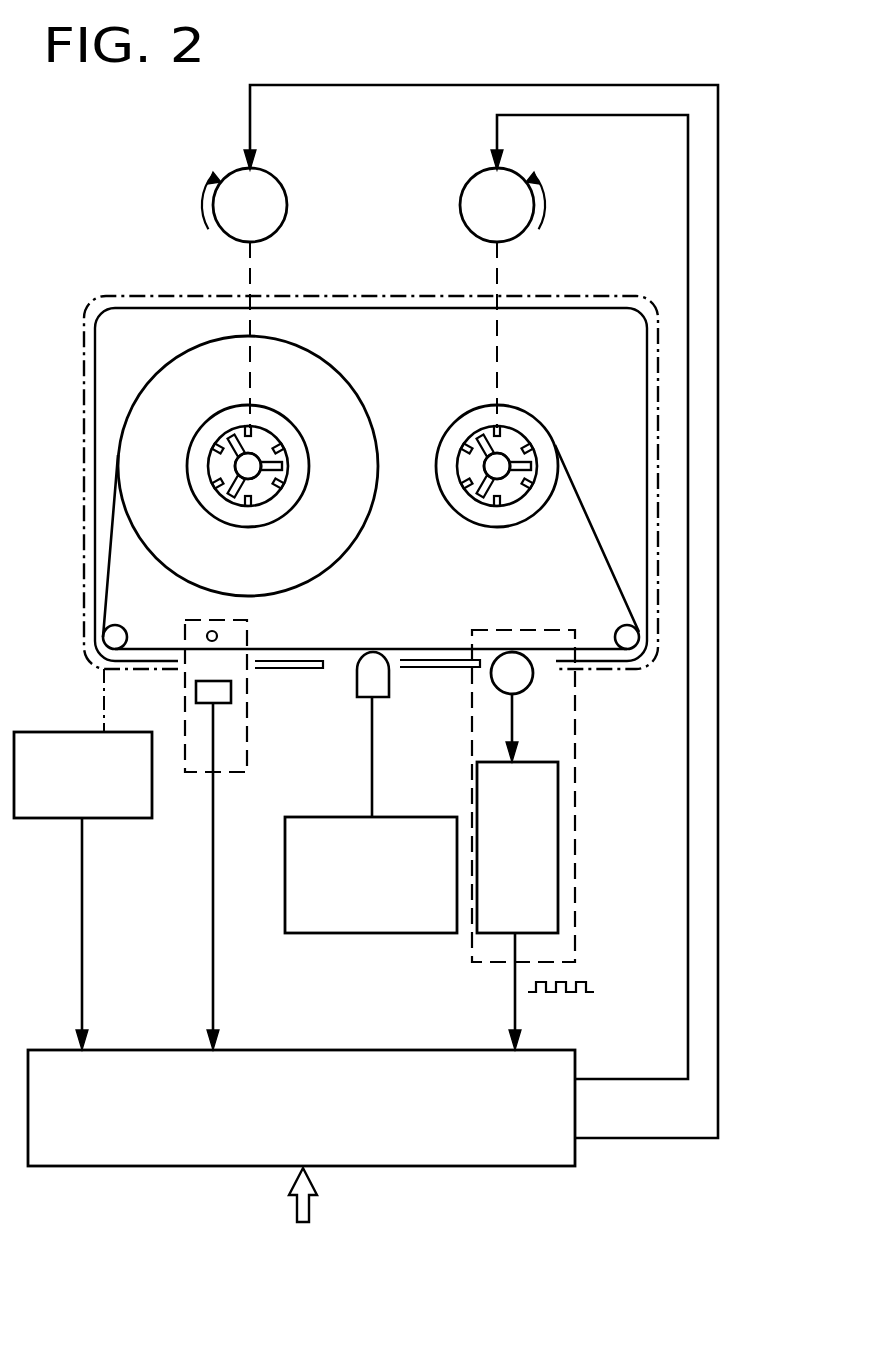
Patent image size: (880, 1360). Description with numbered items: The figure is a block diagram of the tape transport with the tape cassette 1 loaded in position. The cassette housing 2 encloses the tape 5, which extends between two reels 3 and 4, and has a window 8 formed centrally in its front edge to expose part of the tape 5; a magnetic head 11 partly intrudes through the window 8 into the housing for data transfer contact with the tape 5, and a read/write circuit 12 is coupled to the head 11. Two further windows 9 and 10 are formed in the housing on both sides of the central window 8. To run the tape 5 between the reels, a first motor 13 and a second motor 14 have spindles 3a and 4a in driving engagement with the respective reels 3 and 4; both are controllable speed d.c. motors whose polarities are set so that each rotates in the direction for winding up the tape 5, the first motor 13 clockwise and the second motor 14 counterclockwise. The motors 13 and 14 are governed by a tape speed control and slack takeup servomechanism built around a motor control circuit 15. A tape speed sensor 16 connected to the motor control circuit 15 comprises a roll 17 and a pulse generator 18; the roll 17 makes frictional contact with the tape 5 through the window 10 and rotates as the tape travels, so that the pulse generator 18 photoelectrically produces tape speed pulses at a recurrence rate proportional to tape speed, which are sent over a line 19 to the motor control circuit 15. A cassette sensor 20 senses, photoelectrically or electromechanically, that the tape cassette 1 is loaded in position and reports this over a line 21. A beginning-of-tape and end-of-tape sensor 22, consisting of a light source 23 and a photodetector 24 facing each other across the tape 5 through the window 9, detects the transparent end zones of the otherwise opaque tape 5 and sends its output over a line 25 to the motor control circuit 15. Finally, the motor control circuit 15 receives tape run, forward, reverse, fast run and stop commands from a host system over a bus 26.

The tape cassette 1 is at (62, 440).
The cassette housing 2 is at (78, 510).
The reel 3 is at (290, 437).
The spindle 3a is at (280, 467).
The reel 4 is at (533, 430).
The spindle 4a is at (530, 463).
The tape 5 is at (345, 540).
The window 8 is at (396, 662).
The window 9 is at (184, 668).
The window 10 is at (556, 668).
The magnetic head 11 is at (357, 684).
The read/write circuit 12 is at (420, 817).
The first motor 13 is at (287, 209).
The second motor 14 is at (460, 207).
The motor control circuit 15 is at (347, 1050).
The tape speed sensor 16 is at (576, 818).
The roll 17 is at (508, 663).
The pulse generator 18 is at (558, 858).
The line 19 is at (515, 990).
The cassette sensor 20 is at (48, 732).
The line 21 is at (84, 992).
The BOT and EOT sensor 22 is at (224, 717).
The light source 23 is at (218, 636).
The photodetector 24 is at (196, 703).
The line 25 is at (215, 992).
The bus 26 is at (310, 1208).